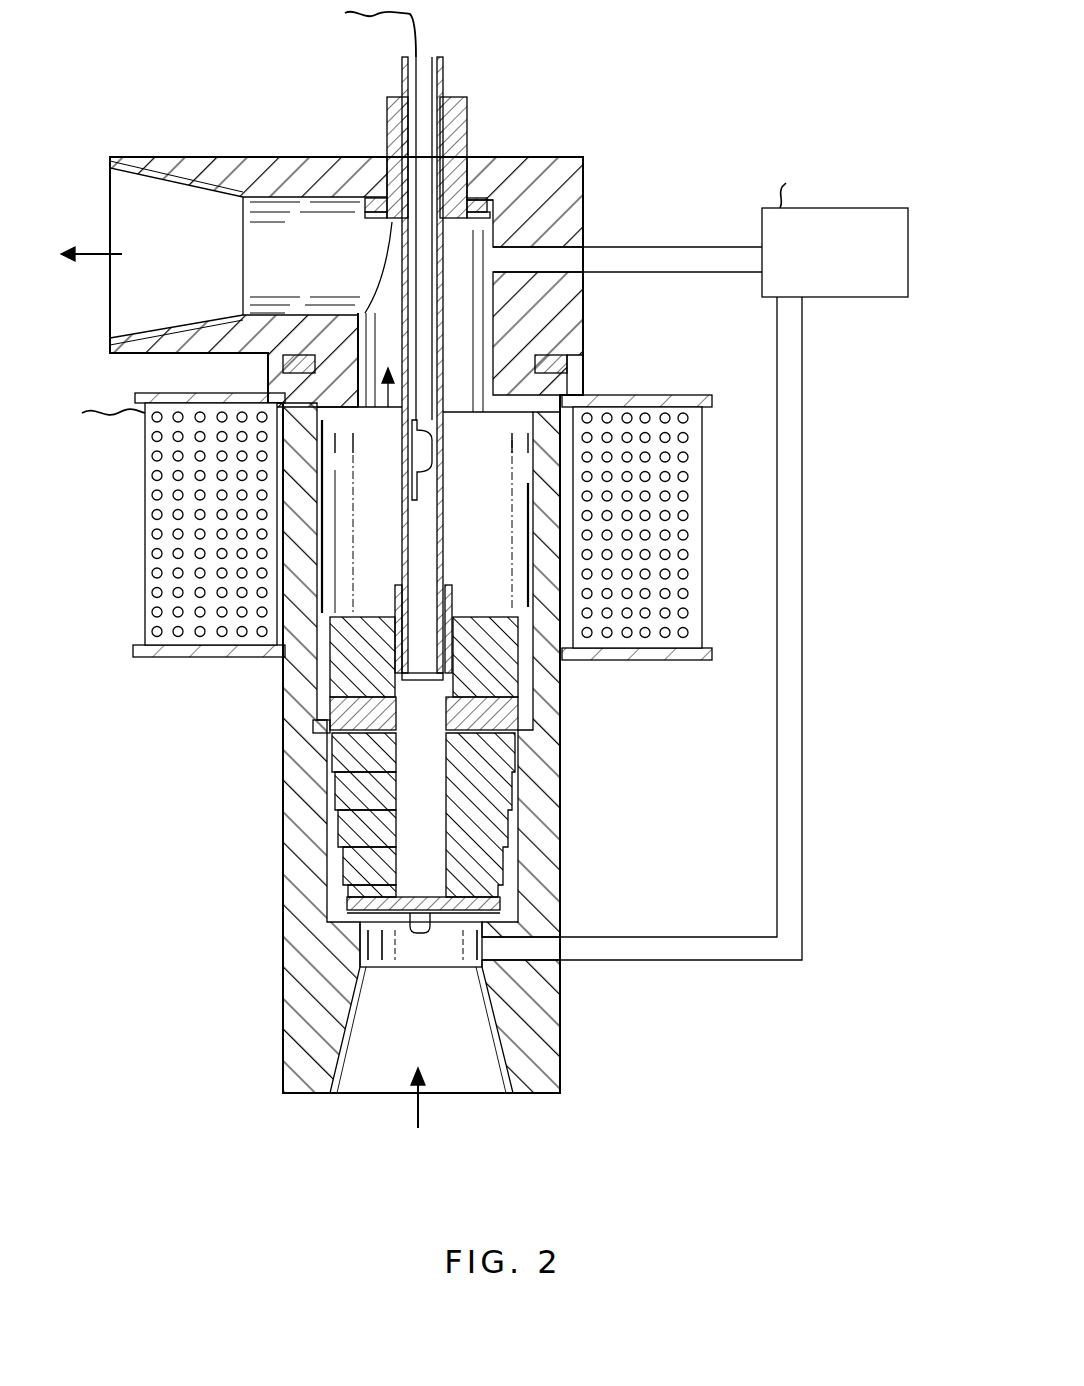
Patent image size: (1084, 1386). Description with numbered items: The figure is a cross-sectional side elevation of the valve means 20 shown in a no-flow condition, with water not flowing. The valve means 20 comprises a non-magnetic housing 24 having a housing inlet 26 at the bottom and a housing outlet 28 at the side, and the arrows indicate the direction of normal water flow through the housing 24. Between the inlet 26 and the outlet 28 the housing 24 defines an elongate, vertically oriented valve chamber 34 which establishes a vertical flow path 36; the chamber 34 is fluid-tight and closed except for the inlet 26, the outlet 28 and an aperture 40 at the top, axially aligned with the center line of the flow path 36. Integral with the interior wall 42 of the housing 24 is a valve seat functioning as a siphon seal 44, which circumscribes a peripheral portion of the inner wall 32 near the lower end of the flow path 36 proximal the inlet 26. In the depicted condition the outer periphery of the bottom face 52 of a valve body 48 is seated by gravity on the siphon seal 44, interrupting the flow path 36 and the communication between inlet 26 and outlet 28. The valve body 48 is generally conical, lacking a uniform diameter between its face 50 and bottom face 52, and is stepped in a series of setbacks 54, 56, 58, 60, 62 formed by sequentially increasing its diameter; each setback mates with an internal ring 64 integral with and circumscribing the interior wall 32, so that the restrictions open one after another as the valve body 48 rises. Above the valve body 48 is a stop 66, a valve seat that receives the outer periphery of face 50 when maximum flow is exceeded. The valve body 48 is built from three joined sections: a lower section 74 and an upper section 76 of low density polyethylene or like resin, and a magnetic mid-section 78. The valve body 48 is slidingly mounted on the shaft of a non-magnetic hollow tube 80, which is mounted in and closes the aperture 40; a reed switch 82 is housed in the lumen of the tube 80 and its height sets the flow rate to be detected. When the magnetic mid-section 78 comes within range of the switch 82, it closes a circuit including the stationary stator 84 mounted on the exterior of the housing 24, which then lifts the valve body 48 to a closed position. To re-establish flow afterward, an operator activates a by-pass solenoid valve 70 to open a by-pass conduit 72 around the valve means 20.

The valve means 20 is at (166, 727).
The housing 24 is at (562, 826).
The housing inlet 26 is at (357, 1077).
The housing outlet 28 is at (127, 306).
The inner wall 32 is at (533, 512).
The valve chamber 34 is at (431, 523).
The flow path 36 is at (320, 433).
The aperture 40 is at (386, 232).
The interior wall 42 is at (317, 573).
The siphon seal 44 is at (490, 920).
The valve body 48 is at (340, 656).
The face 50 is at (490, 608).
The bottom face 52 is at (362, 933).
The setback 54 is at (333, 901).
The setback 56 is at (333, 866).
The setback 58 is at (335, 833).
The setback 60 is at (333, 798).
The setback 62 is at (330, 761).
The internal ring 64 is at (320, 726).
The stop 66 is at (305, 420).
The solenoid valve 70 is at (872, 208).
The by-pass conduit 72 is at (797, 423).
The lower section 74 is at (500, 833).
The upper section 76 is at (508, 662).
The mid-section 78 is at (512, 713).
The hollow tube 80 is at (450, 242).
The reed switch 82 is at (437, 448).
The stator 84 is at (685, 508).